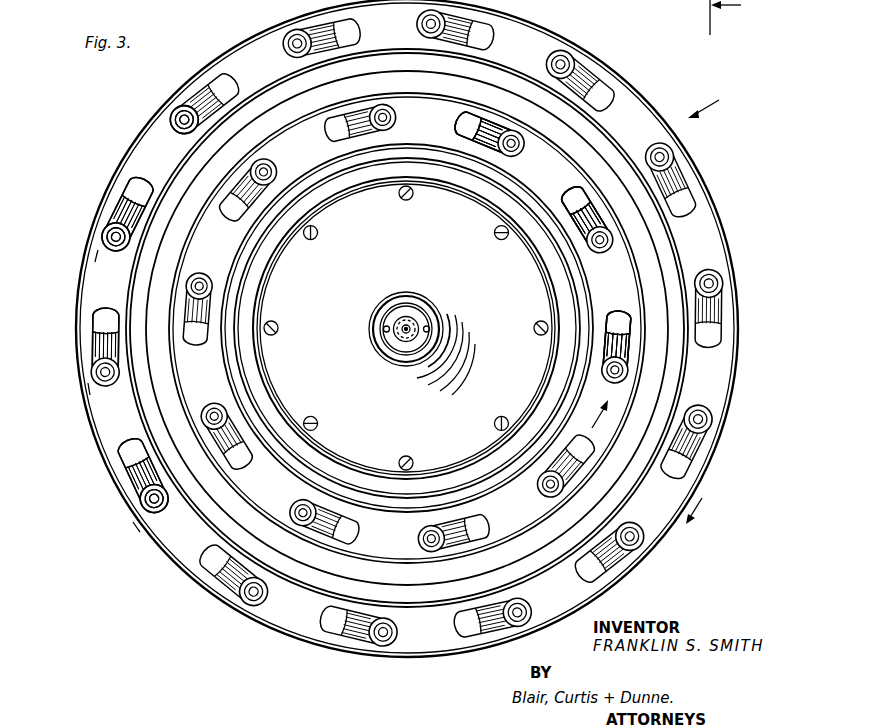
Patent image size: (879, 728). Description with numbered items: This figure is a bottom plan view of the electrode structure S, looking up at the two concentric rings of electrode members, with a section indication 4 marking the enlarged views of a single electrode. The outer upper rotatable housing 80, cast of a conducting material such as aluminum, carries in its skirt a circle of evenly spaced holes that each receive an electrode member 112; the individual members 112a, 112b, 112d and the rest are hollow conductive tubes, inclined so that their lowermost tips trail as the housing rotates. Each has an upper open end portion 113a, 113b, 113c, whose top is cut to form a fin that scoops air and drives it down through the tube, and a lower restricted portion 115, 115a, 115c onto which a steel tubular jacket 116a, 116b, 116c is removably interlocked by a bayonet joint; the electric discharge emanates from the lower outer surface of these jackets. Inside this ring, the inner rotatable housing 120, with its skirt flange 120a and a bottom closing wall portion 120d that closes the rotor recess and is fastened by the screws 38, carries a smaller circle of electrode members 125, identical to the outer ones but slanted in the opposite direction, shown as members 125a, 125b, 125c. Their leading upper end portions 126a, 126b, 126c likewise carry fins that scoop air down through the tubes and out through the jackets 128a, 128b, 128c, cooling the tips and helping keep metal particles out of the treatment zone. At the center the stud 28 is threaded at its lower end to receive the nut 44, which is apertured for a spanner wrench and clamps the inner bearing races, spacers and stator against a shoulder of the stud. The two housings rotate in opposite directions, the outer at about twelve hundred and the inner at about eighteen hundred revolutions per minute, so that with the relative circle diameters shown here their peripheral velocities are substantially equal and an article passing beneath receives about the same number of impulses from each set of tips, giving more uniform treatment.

The electrode member 112 is at (176, 111).
The electrode member 112a is at (108, 215).
The electrode member 112b is at (95, 347).
The electrode member 112d is at (240, 600).
The upper open end portion 113a is at (130, 197).
The upper open end portion 113b is at (104, 315).
The upper open end portion 113c is at (140, 448).
The lower restricted portion 115 is at (176, 130).
The lower restricted portion 115a is at (104, 245).
The lower restricted portion 115c is at (152, 514).
The tubular jacket 116a is at (133, 222).
The tubular jacket 116b is at (93, 358).
The tubular jacket 116c is at (141, 512).
The inner rotatable housing 120 is at (601, 154).
The ring flange 120a is at (505, 40).
The bottom closing wall portion 120d is at (406, 328).
The electrode member 125 is at (240, 465).
The electrode member 125a is at (466, 126).
The electrode member 125b is at (573, 205).
The electrode member 125c is at (627, 320).
The leading upper end portion 126a is at (478, 118).
The leading upper end portion 126b is at (575, 206).
The leading upper end portion 126c is at (610, 323).
The jacket 128a is at (487, 130).
The jacket 128b is at (607, 222).
The jacket 128c is at (633, 358).
The screws 38 is at (407, 201).
The nut 44 is at (428, 320).
The stud 28 is at (412, 340).
The upper rotatable housing 80 is at (633, 84).
The electrode structure S is at (710, 104).
The section line 4 is at (733, 17).